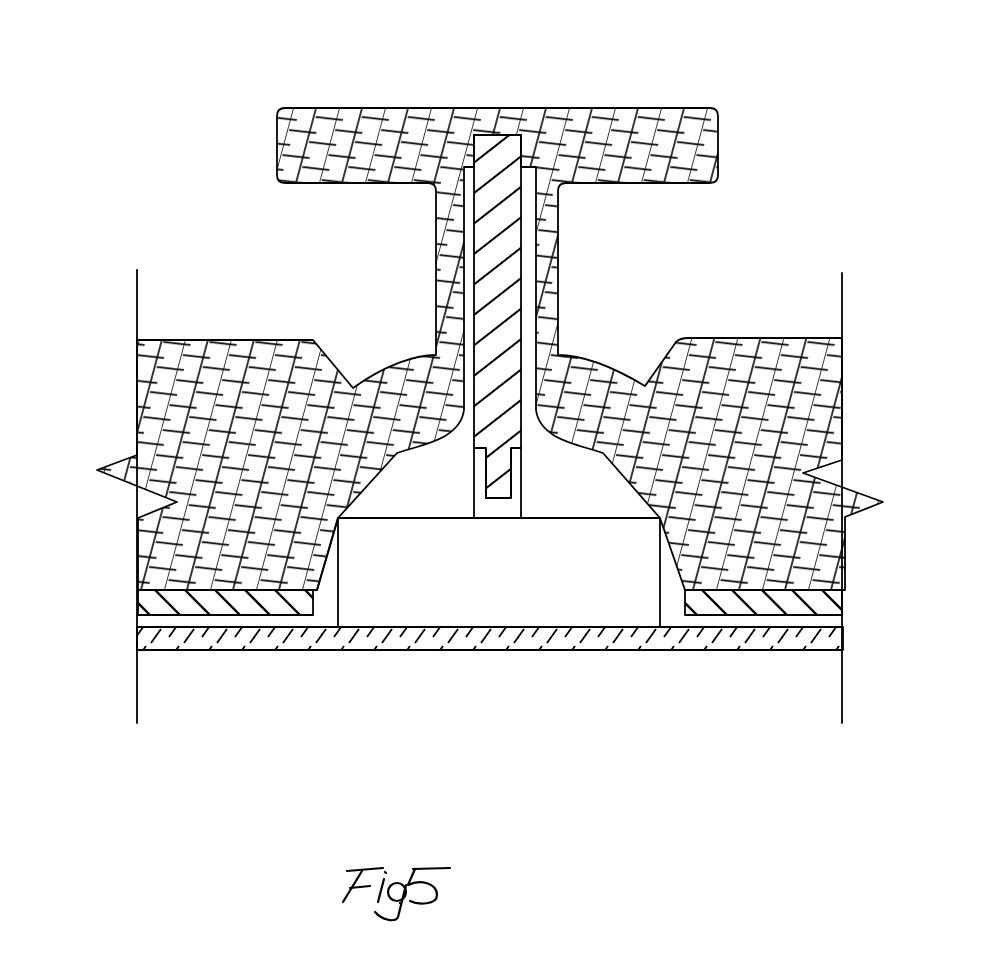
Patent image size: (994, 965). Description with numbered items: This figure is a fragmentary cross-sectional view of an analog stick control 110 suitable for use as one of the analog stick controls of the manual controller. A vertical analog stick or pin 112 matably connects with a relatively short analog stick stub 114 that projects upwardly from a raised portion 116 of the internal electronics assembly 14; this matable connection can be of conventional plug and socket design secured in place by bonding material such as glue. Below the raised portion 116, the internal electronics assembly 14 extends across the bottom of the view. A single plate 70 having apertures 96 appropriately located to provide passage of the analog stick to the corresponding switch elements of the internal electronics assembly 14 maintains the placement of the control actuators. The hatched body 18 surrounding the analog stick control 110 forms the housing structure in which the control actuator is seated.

The internal electronics assembly 14 is at (208, 650).
The housing 18 is at (745, 335).
The plate 70 is at (140, 603).
The apertures 96 is at (321, 603).
The analog stick control 110 is at (567, 269).
The analog stick 112 is at (510, 333).
The analog stick stub 114 is at (517, 500).
The raised portion 116 is at (580, 610).